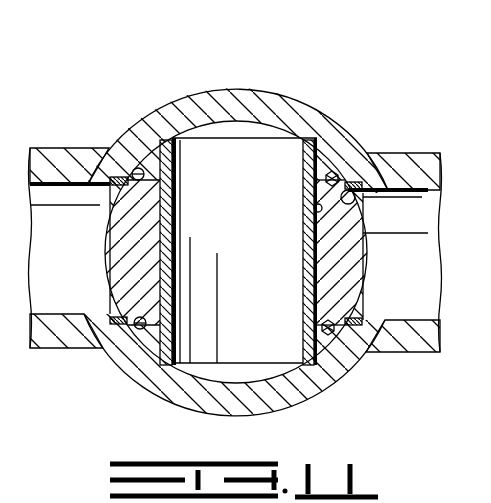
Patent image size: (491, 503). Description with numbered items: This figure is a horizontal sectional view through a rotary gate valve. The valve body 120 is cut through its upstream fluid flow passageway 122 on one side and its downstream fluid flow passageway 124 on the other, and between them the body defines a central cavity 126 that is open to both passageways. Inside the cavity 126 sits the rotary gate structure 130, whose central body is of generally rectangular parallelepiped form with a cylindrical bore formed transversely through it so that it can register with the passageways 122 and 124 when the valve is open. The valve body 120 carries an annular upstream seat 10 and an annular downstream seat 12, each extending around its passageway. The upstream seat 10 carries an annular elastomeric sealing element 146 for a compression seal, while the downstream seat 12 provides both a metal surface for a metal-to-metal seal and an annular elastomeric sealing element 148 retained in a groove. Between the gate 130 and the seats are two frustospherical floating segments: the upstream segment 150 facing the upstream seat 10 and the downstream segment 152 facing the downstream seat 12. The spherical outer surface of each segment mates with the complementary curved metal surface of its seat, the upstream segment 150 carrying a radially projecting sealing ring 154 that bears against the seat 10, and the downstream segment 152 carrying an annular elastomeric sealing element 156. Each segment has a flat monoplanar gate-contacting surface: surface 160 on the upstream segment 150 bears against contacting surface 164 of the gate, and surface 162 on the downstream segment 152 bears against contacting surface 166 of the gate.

The upstream seat 10 is at (352, 192).
The downstream seat 12 is at (133, 173).
The valve body 120 is at (110, 118).
The upstream fluid flow passageway 122 is at (395, 256).
The downstream fluid flow passageway 124 is at (84, 229).
The central cavity 126 is at (232, 138).
The rotary gate structure 130 is at (300, 334).
The annular sealing element 146 is at (439, 347).
The annular elastomeric sealing element 148 is at (117, 327).
The upstream floating segment 150 is at (340, 298).
The downstream floating segment 152 is at (118, 256).
The sealing ring 154 is at (334, 173).
The annular elastomeric sealing element 156 is at (132, 331).
The gate-contacting central surface 160 is at (313, 204).
The gate-contacting surface 162 is at (172, 184).
The contacting surface 164 is at (312, 289).
The contacting surface 166 is at (175, 277).